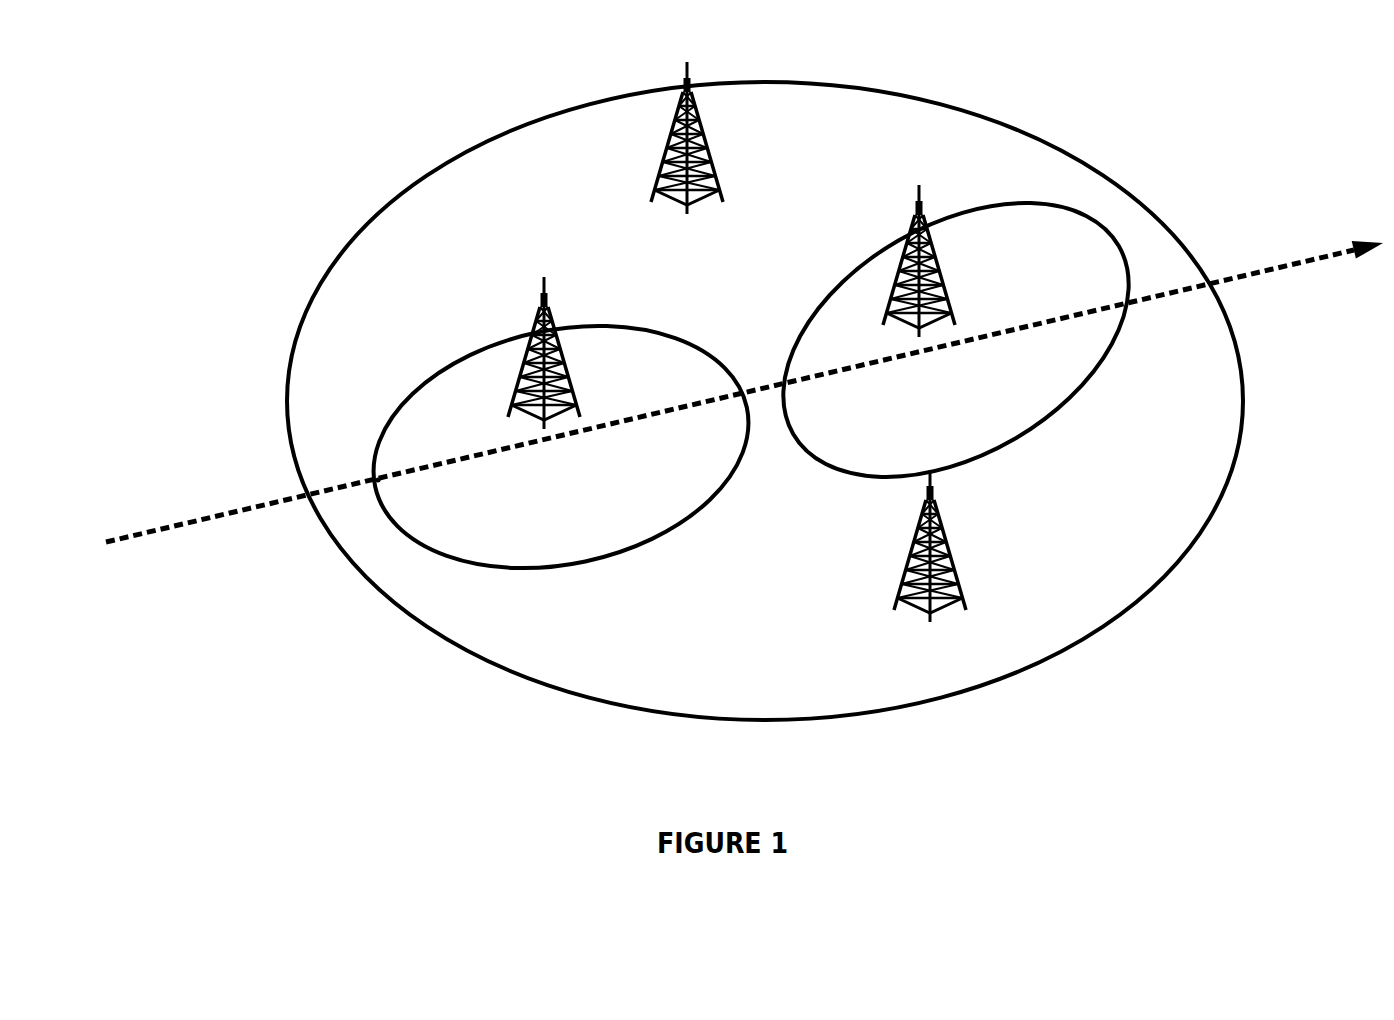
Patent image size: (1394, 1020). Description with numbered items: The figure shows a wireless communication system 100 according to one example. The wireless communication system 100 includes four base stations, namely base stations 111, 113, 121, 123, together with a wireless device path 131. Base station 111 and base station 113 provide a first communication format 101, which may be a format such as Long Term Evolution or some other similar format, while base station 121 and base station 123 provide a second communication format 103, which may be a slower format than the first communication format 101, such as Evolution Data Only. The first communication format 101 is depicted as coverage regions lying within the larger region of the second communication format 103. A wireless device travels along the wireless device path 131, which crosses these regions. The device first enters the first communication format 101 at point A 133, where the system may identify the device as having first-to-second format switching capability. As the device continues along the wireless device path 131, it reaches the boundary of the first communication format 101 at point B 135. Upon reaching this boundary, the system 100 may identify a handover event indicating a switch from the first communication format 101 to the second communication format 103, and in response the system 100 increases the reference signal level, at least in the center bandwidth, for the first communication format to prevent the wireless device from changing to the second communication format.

The wireless communication system 100 is at (233, 131).
The first communication format 101 is at (763, 373).
The second communication format 103 is at (765, 401).
The base station 111 is at (540, 322).
The base station 113 is at (910, 226).
The base station 121 is at (684, 80).
The base station 123 is at (898, 532).
The wireless device path 131 is at (200, 506).
The point A 133 is at (376, 479).
The point B 135 is at (740, 392).